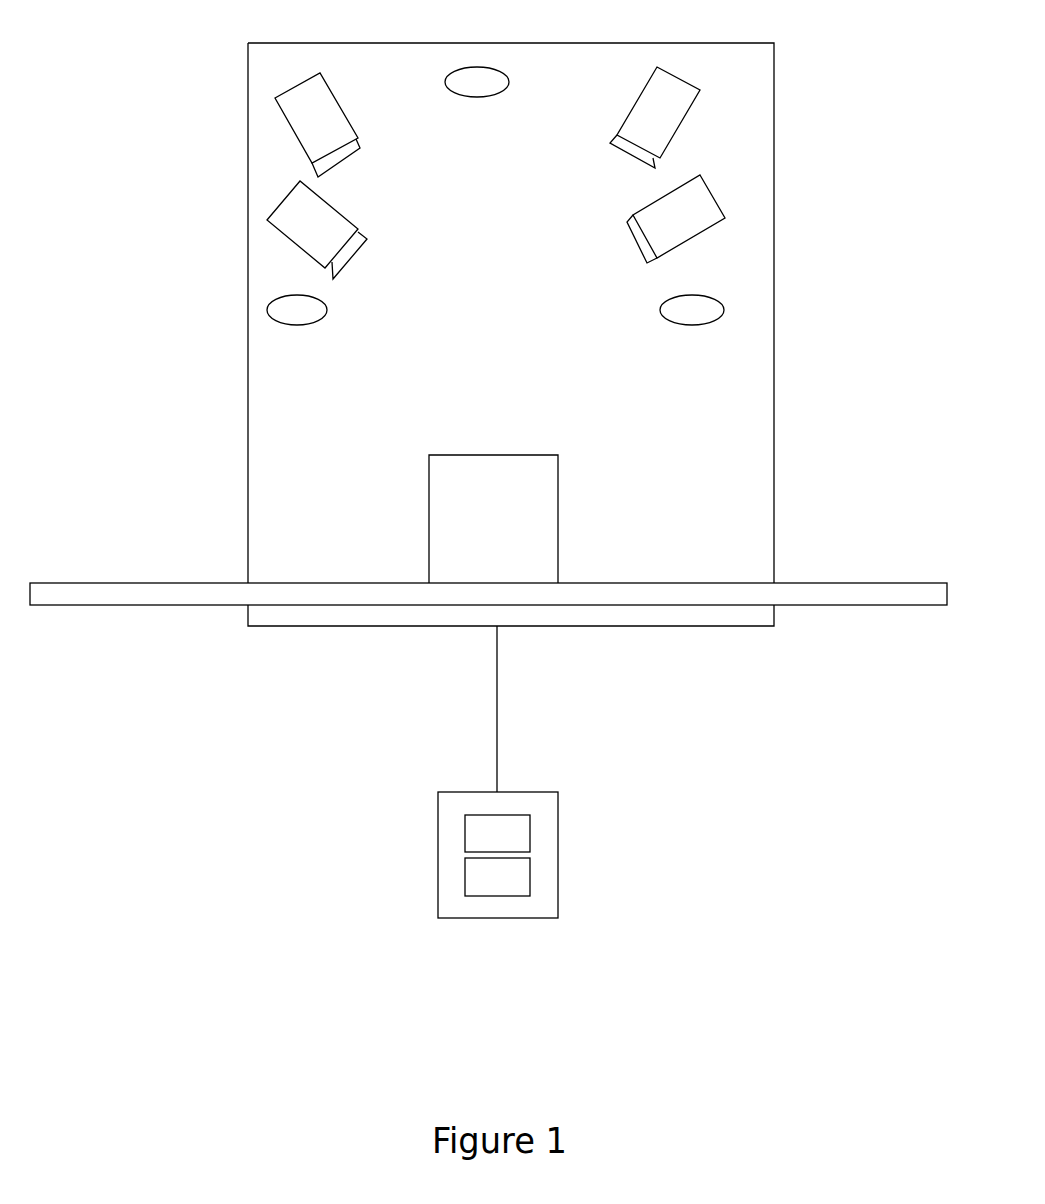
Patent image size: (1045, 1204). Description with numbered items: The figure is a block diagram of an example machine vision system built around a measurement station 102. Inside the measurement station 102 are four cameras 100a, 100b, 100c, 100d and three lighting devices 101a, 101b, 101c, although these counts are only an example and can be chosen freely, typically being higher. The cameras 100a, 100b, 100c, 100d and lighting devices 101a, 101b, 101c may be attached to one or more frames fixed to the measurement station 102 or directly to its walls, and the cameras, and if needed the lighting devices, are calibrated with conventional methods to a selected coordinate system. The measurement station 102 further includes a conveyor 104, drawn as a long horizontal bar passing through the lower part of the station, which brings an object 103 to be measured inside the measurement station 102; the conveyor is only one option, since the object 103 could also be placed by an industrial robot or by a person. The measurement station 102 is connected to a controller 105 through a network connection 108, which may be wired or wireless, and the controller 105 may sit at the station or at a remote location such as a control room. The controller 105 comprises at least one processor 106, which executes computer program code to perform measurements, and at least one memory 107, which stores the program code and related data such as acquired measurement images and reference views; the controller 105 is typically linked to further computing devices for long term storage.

The camera 100a is at (333, 200).
The camera 100b is at (340, 101).
The camera 100c is at (700, 87).
The camera 100d is at (627, 222).
The lighting device 101a is at (327, 303).
The lighting device 101b is at (509, 75).
The lighting device 101c is at (660, 316).
The measurement station 102 is at (248, 420).
The object 103 is at (558, 484).
The conveyor 104 is at (488, 572).
The controller 105 is at (558, 841).
The processor 106 is at (518, 846).
The memory 107 is at (518, 890).
The network connection 108 is at (497, 721).